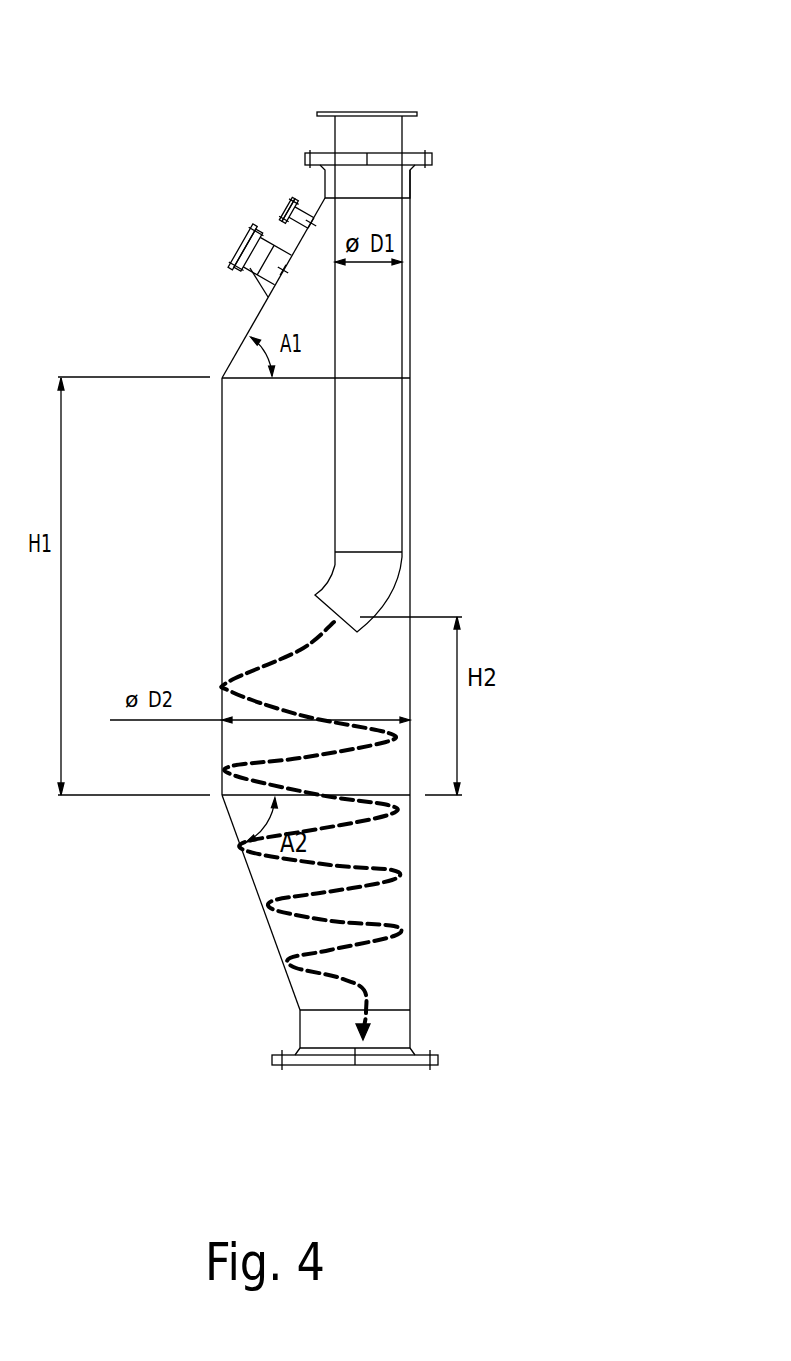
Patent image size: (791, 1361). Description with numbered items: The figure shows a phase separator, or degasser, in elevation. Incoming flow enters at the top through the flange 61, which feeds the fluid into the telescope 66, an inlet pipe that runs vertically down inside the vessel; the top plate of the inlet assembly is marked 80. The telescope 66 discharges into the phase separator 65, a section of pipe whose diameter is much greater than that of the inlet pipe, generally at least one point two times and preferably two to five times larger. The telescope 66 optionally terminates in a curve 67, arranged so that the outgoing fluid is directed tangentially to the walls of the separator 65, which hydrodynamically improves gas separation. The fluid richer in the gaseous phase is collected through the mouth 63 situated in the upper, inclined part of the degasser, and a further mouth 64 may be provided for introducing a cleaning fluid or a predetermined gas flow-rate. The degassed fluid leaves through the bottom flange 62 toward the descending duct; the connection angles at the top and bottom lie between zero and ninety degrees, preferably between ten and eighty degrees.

The top cover plate 80 is at (317, 110).
The flange 61 is at (377, 100).
The telescope 66 is at (402, 138).
The further mouth 64 is at (269, 180).
The mouth 63 is at (230, 238).
The phase separator 65 is at (243, 587).
The curve 67 is at (330, 571).
The flange 62 is at (355, 1078).